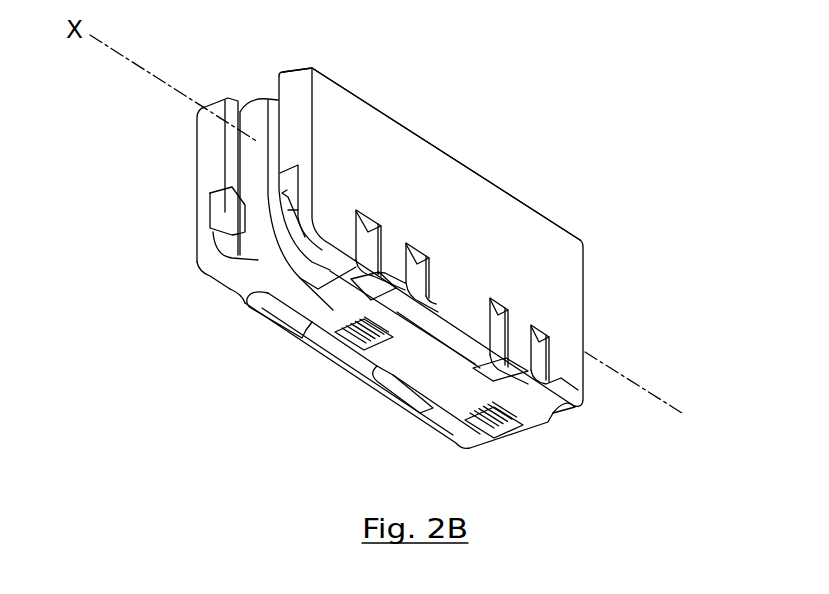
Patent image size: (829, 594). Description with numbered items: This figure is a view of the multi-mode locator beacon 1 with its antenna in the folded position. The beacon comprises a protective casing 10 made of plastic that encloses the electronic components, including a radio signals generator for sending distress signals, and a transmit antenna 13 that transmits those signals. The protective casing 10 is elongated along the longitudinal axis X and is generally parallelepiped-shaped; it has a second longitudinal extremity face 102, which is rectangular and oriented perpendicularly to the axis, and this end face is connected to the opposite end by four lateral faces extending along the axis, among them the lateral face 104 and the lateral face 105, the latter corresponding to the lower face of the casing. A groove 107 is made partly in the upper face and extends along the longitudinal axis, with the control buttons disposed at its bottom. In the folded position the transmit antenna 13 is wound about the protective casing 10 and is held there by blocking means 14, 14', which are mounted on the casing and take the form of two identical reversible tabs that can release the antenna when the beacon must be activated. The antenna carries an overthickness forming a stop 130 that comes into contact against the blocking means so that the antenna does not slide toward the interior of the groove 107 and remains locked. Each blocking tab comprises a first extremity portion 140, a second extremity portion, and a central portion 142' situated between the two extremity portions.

The multi-mode locator beacon 1 is at (522, 138).
The protective casing 10 is at (383, 112).
The transmit antenna 13 is at (263, 228).
The blocking means 14 is at (396, 389).
The blocking means 14' is at (245, 330).
The second longitudinal extremity face 102 is at (215, 153).
The lateral face 104 is at (556, 255).
The lateral face 105 is at (353, 370).
The groove 107 is at (260, 97).
The stop 130 is at (503, 433).
The first extremity portion 140 is at (590, 398).
The central portion 142' is at (395, 352).